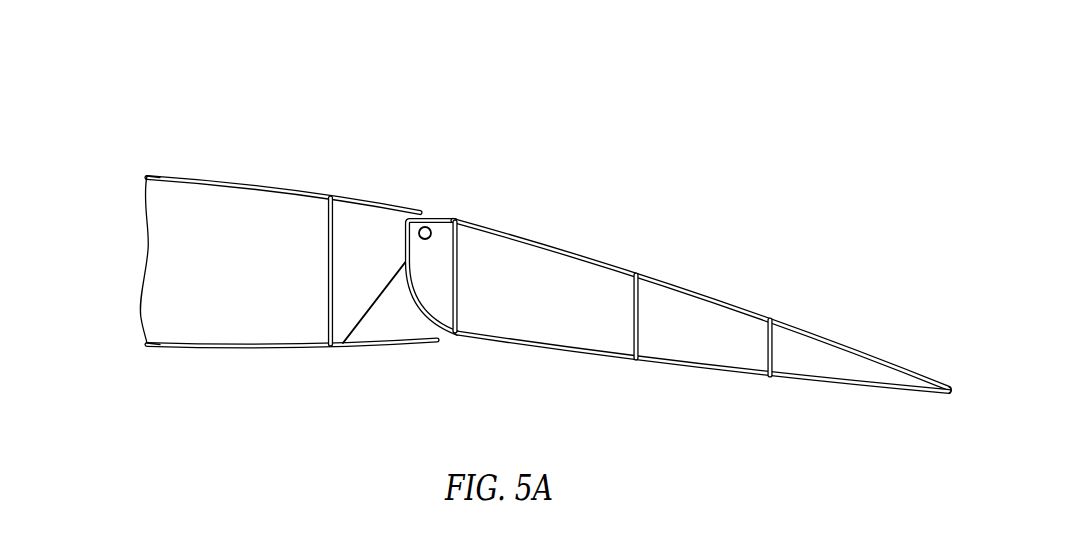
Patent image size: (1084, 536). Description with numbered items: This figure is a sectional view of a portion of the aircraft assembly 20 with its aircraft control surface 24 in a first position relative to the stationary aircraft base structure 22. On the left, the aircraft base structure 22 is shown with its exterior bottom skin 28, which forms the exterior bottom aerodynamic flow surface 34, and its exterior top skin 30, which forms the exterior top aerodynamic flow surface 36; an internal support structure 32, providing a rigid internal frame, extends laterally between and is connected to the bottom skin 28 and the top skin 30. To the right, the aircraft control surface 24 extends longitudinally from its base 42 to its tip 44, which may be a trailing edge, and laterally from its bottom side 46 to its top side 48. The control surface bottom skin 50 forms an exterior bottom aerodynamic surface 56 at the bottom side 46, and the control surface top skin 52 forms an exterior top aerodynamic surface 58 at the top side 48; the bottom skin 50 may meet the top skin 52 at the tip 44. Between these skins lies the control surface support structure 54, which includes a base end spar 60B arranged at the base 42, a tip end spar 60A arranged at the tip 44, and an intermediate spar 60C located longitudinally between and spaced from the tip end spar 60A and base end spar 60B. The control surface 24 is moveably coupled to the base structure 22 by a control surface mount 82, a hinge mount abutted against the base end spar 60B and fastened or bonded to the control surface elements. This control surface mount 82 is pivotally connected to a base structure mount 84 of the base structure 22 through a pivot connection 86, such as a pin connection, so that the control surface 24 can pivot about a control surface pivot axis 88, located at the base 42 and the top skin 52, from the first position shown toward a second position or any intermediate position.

The aircraft assembly 20 is at (503, 244).
The aircraft base structure 22 is at (243, 255).
The aircraft control surface 24 is at (683, 310).
The exterior bottom skin 28 is at (134, 345).
The exterior top skin 30 is at (136, 174).
The internal support structure 32 is at (138, 248).
The exterior bottom aerodynamic flow surface 34 is at (185, 349).
The exterior top aerodynamic flow surface 36 is at (208, 175).
The base 42 is at (402, 243).
The tip 44 is at (952, 393).
The bottom side 46 is at (703, 392).
The top side 48 is at (701, 300).
The control surface bottom skin 50 is at (815, 403).
The control surface top skin 52 is at (814, 313).
The control surface support structure 54 is at (790, 346).
The exterior bottom aerodynamic surface 56 is at (715, 376).
The exterior top aerodynamic surface 58 is at (700, 278).
The tip end spar 60A is at (773, 353).
The base end spar 60B is at (458, 285).
The intermediate spar 60C is at (640, 324).
The control surface mount 82 is at (437, 297).
The base structure mount 84 is at (378, 313).
The pivot connection 86 is at (440, 188).
The control surface pivot axis 88 is at (428, 226).